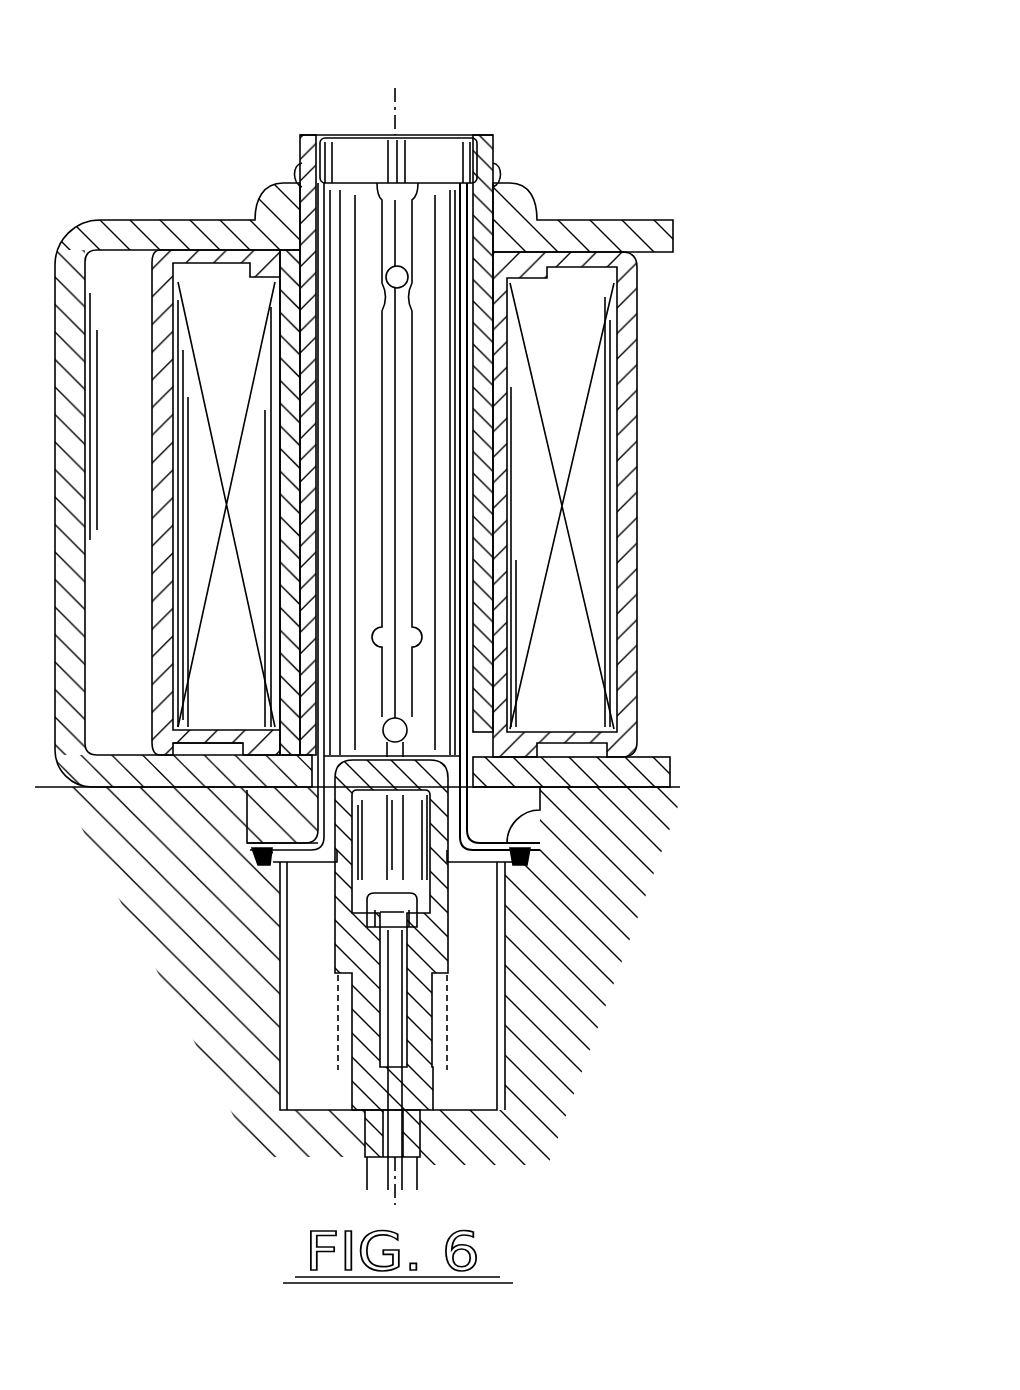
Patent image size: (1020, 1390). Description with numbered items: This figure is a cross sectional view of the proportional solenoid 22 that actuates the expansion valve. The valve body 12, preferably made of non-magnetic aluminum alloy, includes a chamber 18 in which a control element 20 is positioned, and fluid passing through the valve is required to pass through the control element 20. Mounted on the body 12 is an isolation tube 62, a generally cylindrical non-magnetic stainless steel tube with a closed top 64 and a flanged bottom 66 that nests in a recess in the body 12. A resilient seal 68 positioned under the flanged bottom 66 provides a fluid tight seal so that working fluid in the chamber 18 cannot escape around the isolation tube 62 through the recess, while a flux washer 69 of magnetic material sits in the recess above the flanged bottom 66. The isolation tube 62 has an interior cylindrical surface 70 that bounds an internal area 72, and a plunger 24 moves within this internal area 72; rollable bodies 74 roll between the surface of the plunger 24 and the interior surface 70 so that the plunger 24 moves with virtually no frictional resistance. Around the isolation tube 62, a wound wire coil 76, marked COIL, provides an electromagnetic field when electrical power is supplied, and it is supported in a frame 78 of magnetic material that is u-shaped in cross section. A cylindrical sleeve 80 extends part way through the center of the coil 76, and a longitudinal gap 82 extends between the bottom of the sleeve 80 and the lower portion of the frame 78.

The body 12 is at (622, 978).
The chamber 18 is at (485, 1035).
The control element 20 is at (443, 950).
The proportional solenoid 22 is at (740, 775).
The plunger 24 is at (444, 560).
The isolation tube 62 is at (493, 780).
The closed top 64 is at (357, 137).
The flanged bottom 66 is at (508, 815).
The resilient seal 68 is at (525, 858).
The flux washer 69 is at (253, 802).
The cylindrical surface 70 is at (470, 358).
The internal area 72 is at (430, 157).
The rollable bodies 74 is at (403, 722).
The wound wire coil 76 is at (580, 453).
The frame 78 is at (680, 232).
The cylindrical sleeve 80 is at (487, 210).
The longitudinal gap 82 is at (278, 716).
The coil COIL is at (514, 505).